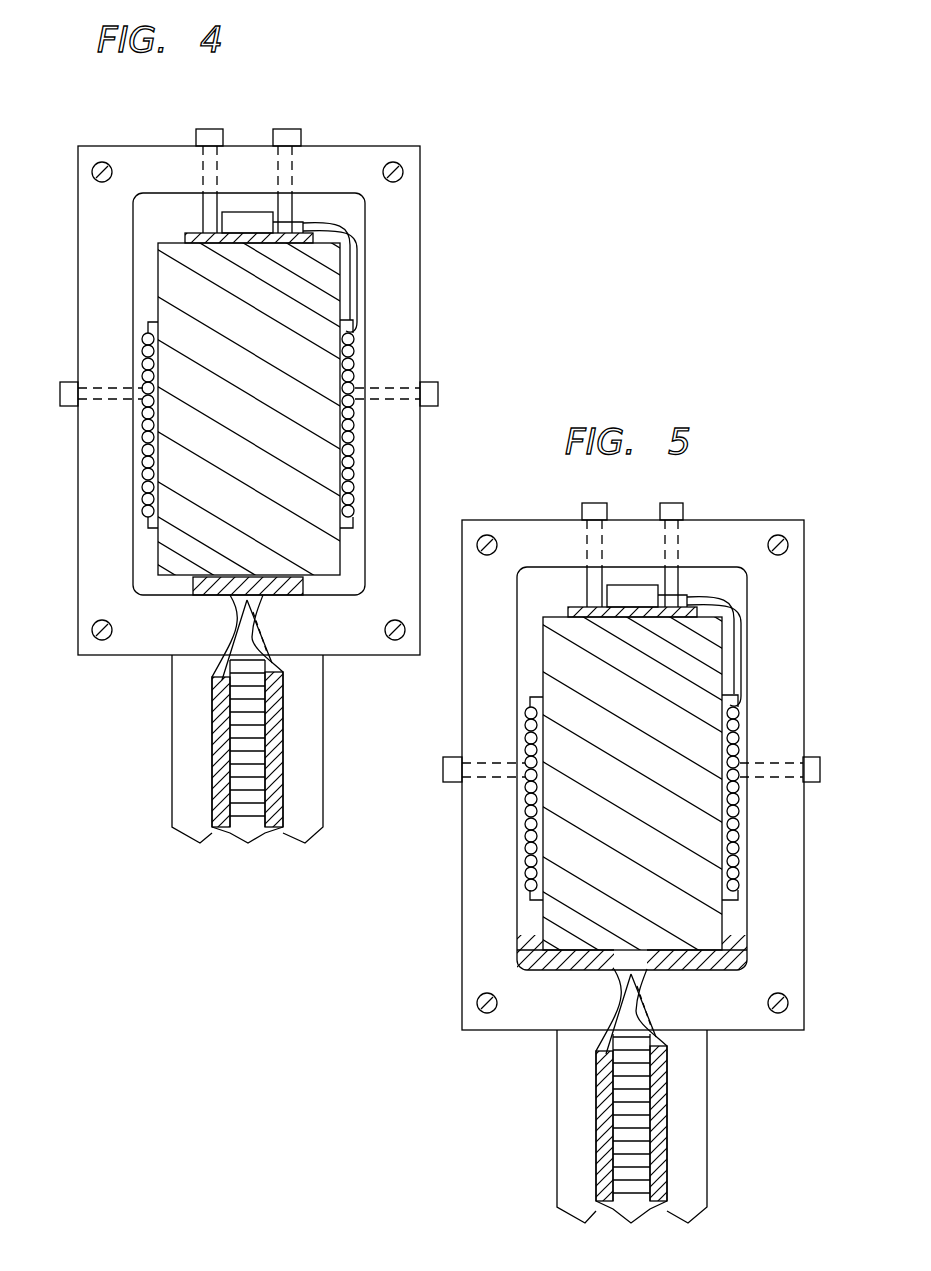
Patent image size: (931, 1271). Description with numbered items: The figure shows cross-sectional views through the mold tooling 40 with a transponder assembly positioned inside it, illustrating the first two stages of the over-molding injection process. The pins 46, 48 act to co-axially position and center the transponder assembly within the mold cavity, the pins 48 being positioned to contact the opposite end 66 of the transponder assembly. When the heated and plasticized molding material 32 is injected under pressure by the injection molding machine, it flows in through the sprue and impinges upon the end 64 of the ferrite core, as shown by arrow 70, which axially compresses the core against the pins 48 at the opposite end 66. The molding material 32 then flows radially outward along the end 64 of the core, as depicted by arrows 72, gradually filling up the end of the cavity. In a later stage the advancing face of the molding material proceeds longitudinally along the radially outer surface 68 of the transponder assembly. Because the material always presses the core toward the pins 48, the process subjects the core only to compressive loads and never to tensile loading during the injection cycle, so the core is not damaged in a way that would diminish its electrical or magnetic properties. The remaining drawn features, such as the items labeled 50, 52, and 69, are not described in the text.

In FIG. 5, the plasticized molding material 32 is at (690, 1030).
In FIG. 4, the mold tooling 40 is at (390, 230).
In FIG. 5, the mold tooling 40 is at (633, 775).
In FIG. 4, the pin 46 is at (402, 403).
In FIG. 5, the pin 46 is at (777, 775).
In FIG. 4, the pin 48 is at (297, 170).
In FIG. 5, the pin 48 is at (683, 533).
In FIG. 4, the pin head 50 is at (435, 381).
In FIG. 4, the terminal bolt 52 is at (213, 128).
In FIG. 4, the end of the core 64 is at (130, 593).
In FIG. 4, the opposite end of the transponder assembly 66 is at (196, 226).
In FIG. 5, the radially outer surface of the transponder assembly 68 is at (540, 921).
In FIG. 4, the gap 69 is at (153, 549).
In FIG. 4, the arrow 70 is at (257, 590).
In FIG. 4, the arrows 72 is at (222, 585).
In FIG. 5, the arrows 72 is at (570, 967).